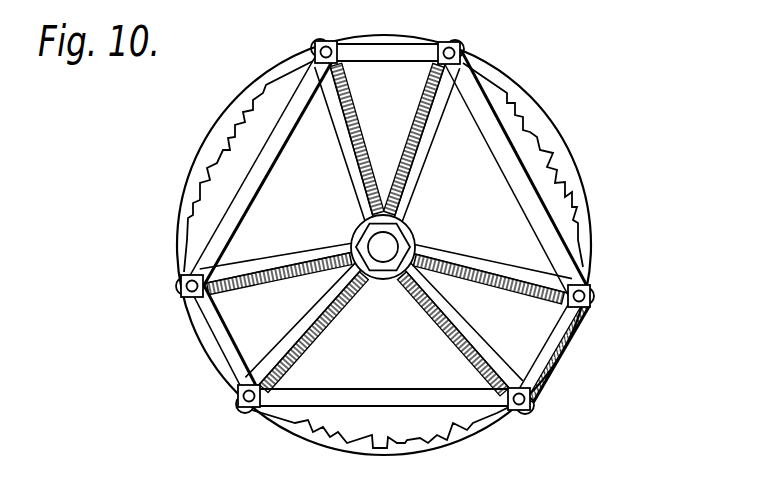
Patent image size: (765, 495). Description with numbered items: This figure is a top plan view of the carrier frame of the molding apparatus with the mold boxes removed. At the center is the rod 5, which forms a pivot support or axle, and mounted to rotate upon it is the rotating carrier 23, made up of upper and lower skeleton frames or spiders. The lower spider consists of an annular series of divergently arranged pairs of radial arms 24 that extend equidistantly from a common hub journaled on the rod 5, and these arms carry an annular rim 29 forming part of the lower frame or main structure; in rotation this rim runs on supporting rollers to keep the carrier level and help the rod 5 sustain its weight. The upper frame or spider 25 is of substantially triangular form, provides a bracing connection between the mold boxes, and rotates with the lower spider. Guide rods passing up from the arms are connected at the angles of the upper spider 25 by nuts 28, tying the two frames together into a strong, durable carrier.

The rod 5 is at (387, 247).
The rotating carrier 23 is at (352, 106).
The radial arms 24 is at (384, 283).
The upper frame or spider 25 is at (257, 177).
The nuts 28 is at (330, 43).
The annular rim 29 is at (580, 187).